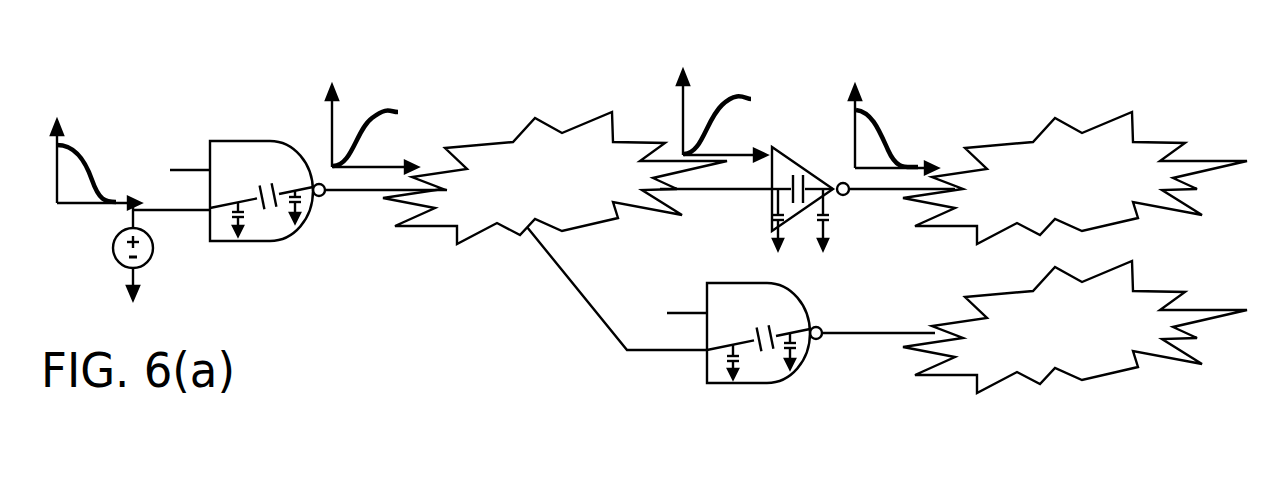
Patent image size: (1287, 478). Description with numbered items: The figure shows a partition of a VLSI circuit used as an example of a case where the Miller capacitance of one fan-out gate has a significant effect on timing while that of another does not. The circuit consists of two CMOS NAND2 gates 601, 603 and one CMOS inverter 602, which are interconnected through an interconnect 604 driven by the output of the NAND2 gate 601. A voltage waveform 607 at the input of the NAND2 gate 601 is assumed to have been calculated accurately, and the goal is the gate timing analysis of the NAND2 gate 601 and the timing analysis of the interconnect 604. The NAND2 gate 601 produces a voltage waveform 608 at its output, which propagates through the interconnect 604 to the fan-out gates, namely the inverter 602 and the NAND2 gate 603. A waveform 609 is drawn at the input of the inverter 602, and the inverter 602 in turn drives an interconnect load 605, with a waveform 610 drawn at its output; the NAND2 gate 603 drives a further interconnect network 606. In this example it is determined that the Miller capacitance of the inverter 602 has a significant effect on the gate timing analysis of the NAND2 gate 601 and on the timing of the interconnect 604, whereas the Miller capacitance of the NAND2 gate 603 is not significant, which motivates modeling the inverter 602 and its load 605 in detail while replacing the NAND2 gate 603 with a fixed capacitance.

The CMOS NAND2 gate 601 is at (263, 141).
The CMOS inverter 602 is at (797, 153).
The CMOS NAND2 gate 603 is at (801, 304).
The interconnect 604 is at (545, 132).
The interconnect load 605 is at (1065, 132).
The interconnect network 606 is at (1202, 308).
The voltage waveform 607 is at (88, 155).
The voltage waveform at the output of the primitive gate 608 is at (375, 112).
The signal waveform at input of inverter 602 609 is at (722, 98).
The signal waveform at output of inverter 602 610 is at (882, 118).